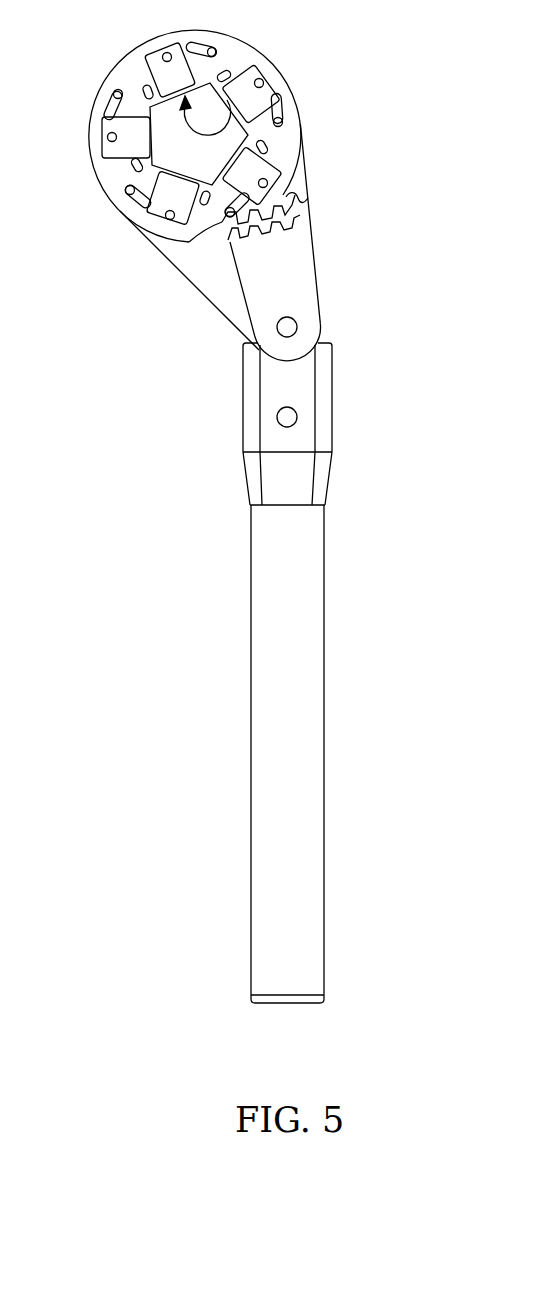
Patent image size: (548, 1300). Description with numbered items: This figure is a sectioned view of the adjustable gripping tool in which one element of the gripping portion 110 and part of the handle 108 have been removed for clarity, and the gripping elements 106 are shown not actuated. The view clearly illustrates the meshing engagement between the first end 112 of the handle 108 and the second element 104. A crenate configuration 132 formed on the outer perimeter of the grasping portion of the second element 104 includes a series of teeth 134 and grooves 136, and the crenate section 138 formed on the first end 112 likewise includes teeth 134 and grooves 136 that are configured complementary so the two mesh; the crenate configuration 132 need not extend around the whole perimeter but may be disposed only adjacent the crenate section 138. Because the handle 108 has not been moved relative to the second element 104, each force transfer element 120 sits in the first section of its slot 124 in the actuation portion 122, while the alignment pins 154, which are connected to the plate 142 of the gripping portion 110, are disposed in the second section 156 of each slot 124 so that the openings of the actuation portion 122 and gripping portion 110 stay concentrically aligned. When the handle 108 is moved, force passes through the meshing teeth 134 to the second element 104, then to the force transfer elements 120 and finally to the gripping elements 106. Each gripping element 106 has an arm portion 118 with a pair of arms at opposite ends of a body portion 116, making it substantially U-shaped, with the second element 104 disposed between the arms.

The second element 104 is at (287, 63).
The gripping element 106 is at (245, 130).
The handle 108 is at (251, 752).
The gripping portion 110 is at (112, 247).
The first end 112 is at (227, 278).
The body portion 116 is at (150, 214).
The arm portion 118 is at (133, 124).
The force transfer element 120 is at (107, 137).
The actuation portion 122 is at (109, 101).
The slot 124 is at (131, 163).
The crenate configuration 132 is at (289, 193).
The teeth 134 is at (288, 198).
The grooves 136 is at (290, 235).
The crenate section 138 is at (257, 243).
The plate 142 is at (205, 258).
The alignment pin 154 is at (210, 48).
The second section 156 is at (283, 123).